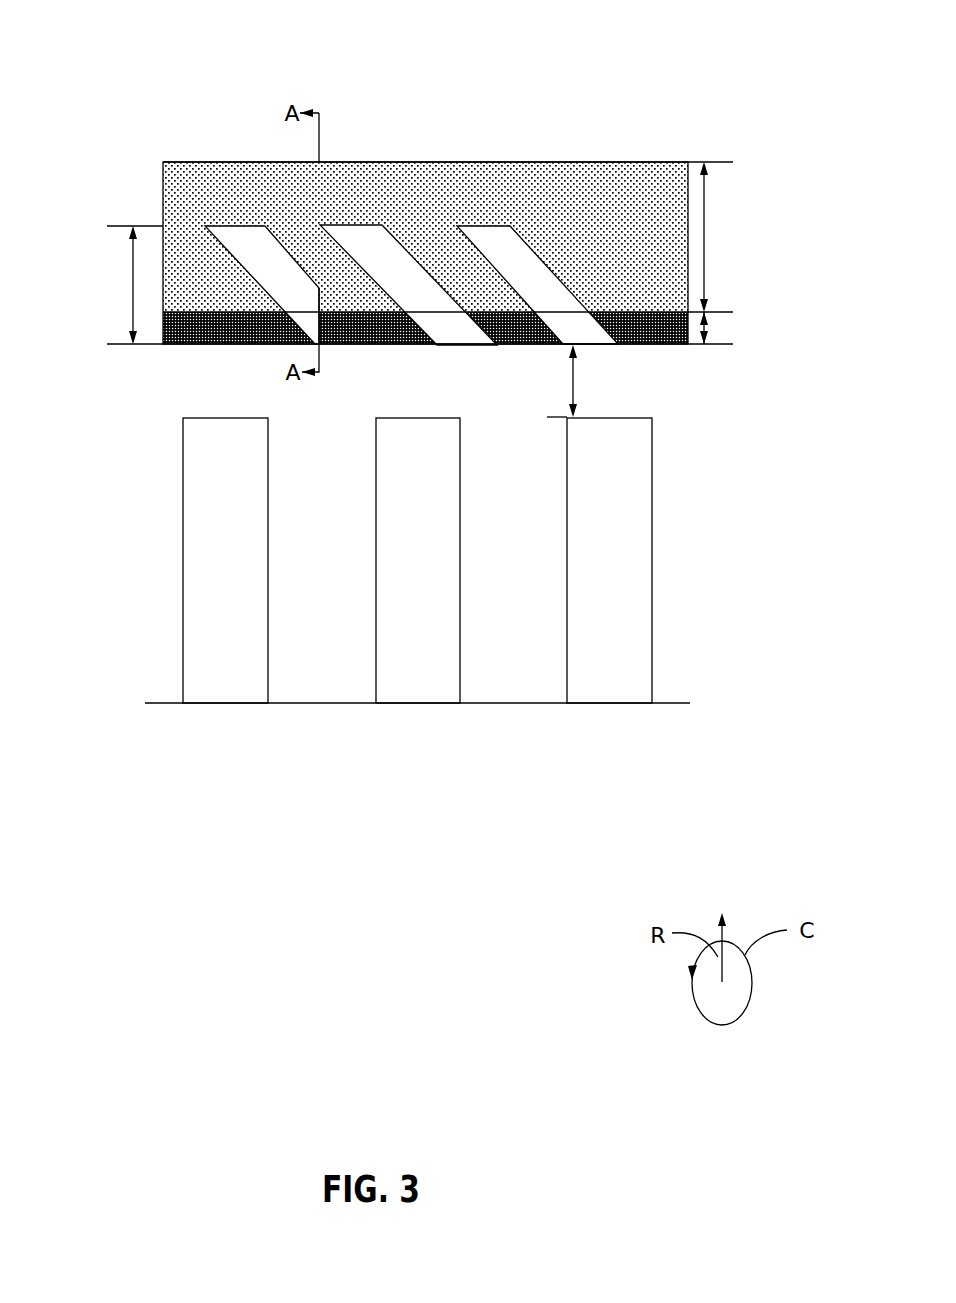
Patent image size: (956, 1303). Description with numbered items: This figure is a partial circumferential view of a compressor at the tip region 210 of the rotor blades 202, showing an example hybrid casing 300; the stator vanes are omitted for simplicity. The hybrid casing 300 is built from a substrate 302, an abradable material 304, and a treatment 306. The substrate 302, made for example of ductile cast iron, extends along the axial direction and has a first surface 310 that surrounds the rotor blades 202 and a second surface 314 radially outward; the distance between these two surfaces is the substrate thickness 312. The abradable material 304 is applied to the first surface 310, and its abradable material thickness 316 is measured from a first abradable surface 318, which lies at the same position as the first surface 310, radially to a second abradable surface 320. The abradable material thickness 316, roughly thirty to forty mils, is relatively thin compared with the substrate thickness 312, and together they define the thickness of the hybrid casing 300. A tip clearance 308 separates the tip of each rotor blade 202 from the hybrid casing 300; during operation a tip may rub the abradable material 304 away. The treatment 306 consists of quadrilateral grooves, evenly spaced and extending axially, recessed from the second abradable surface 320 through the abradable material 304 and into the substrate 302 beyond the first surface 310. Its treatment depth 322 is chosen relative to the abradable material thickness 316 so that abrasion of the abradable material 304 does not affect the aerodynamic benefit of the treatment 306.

The hybrid casing 300 is at (569, 57).
The substrate 302 is at (420, 249).
The abradable material 304 is at (670, 345).
The treatment 306 is at (411, 249).
The tip clearance 308 is at (577, 380).
The first surface 310 is at (502, 345).
The substrate thickness 312 is at (710, 240).
The second surface 314 is at (193, 161).
The abradable material thickness 316 is at (710, 328).
The first abradable surface 318 is at (198, 318).
The second abradable surface 320 is at (250, 345).
The treatment depth 322 is at (133, 293).
The rotor blades 202 is at (233, 718).
The tip region 210 is at (417, 598).